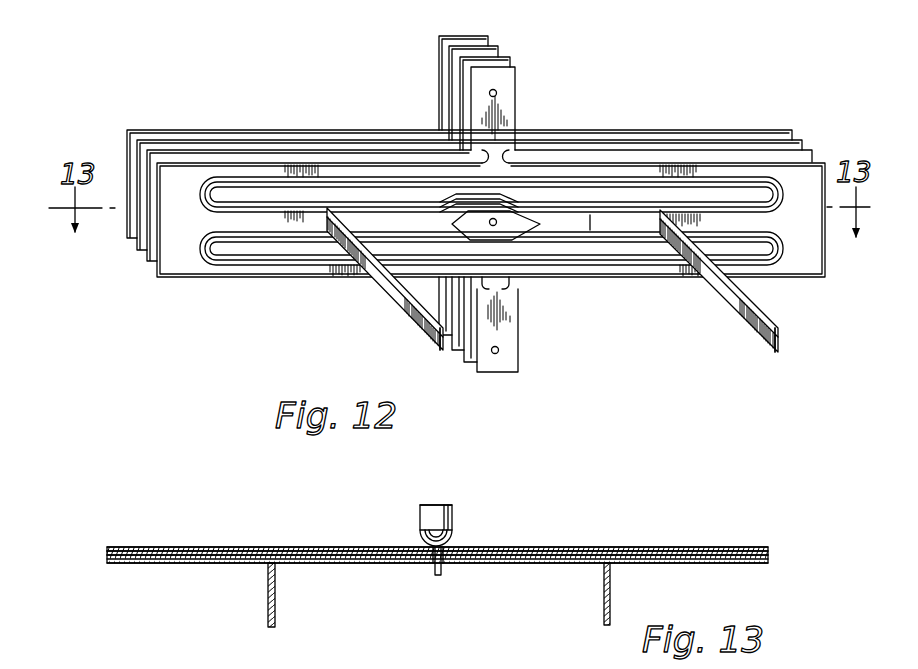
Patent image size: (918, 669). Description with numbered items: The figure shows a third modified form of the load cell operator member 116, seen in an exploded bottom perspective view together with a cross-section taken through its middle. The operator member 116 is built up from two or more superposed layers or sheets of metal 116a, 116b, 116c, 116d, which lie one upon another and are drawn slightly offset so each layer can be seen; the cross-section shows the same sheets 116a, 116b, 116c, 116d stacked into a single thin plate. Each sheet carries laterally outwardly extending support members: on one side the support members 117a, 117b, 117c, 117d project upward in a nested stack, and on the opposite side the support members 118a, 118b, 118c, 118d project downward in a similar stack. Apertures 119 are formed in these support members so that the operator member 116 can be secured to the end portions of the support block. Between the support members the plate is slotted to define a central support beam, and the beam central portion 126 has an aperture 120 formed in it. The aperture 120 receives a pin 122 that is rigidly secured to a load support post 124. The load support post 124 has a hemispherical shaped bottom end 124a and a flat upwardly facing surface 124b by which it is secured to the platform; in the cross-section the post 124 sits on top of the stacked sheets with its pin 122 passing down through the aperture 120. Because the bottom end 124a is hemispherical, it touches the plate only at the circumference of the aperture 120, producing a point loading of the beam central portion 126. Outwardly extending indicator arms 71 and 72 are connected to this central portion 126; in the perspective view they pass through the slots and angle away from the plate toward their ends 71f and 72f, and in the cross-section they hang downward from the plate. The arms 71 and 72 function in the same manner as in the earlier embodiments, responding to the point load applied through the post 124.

In FIG. 12, the load cell operator member 116 is at (619, 129).
In FIG. 13, the load cell operator member 116 is at (588, 545).
In FIG. 12, the sheet of metal 116a is at (124, 241).
In FIG. 13, the sheet of metal 116a is at (747, 547).
In FIG. 12, the sheet of metal 116b is at (134, 253).
In FIG. 13, the sheet of metal 116b is at (771, 552).
In FIG. 12, the sheet of metal 116c is at (144, 264).
In FIG. 13, the sheet of metal 116c is at (771, 558).
In FIG. 12, the sheet of metal 116d is at (194, 278).
In FIG. 13, the sheet of metal 116d is at (749, 564).
In FIG. 12, the support member 117a is at (482, 36).
In FIG. 12, the support member 117b is at (492, 47).
In FIG. 12, the support member 117c is at (503, 58).
In FIG. 12, the support member 117d is at (515, 93).
In FIG. 12, the support member 118a is at (447, 292).
In FIG. 12, the support member 118b is at (458, 320).
In FIG. 12, the support member 118c is at (470, 346).
In FIG. 12, the support member 118d is at (516, 364).
In FIG. 12, the aperture 119 is at (489, 94).
In FIG. 12, the aperture 120 is at (500, 224).
In FIG. 13, the aperture 120 is at (432, 570).
In FIG. 13, the pin 122 is at (442, 572).
In FIG. 13, the load support post 124 is at (452, 512).
In FIG. 13, the hemispherical shaped bottom end 124a is at (456, 537).
In FIG. 13, the flat upwardly facing surface 124b is at (433, 505).
In FIG. 12, the beam central portion 126 is at (591, 230).
In FIG. 12, the indicator arm 71 is at (378, 283).
In FIG. 13, the indicator arm 71 is at (277, 609).
In FIG. 12, the indicator arm end 71f is at (442, 346).
In FIG. 12, the indicator arm 72 is at (727, 301).
In FIG. 13, the indicator arm 72 is at (611, 602).
In FIG. 12, the indicator arm end 72f is at (781, 343).